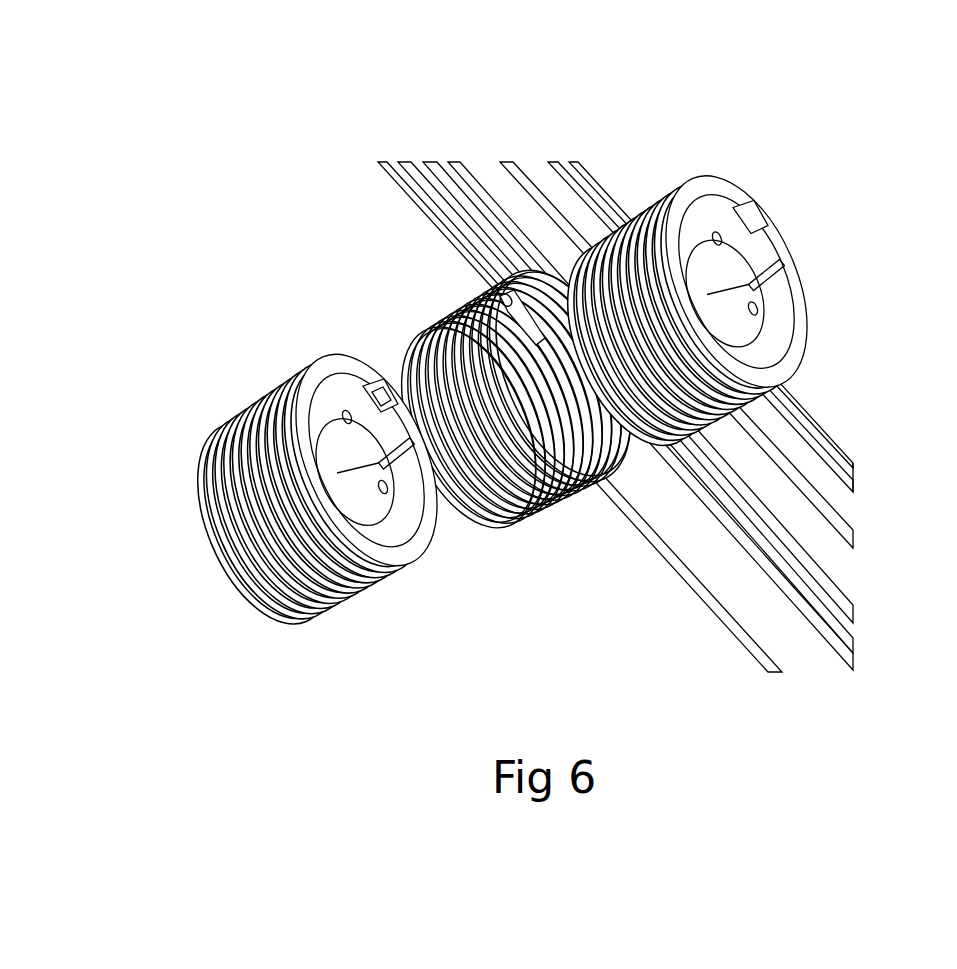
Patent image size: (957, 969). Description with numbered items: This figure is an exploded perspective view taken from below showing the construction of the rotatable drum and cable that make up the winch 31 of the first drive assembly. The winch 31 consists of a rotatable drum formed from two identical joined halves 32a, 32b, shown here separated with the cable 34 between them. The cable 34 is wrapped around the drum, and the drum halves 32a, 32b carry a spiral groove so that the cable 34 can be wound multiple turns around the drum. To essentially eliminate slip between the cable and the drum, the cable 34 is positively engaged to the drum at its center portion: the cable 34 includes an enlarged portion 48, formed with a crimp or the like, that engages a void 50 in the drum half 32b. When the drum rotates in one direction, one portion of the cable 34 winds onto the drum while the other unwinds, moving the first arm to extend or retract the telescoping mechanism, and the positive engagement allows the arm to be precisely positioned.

The winch 31 is at (700, 123).
The drum half 32a is at (803, 305).
The drum half 32b is at (260, 597).
The cable 34 is at (515, 535).
The enlarged portion 48 is at (520, 315).
The void 50 is at (378, 390).